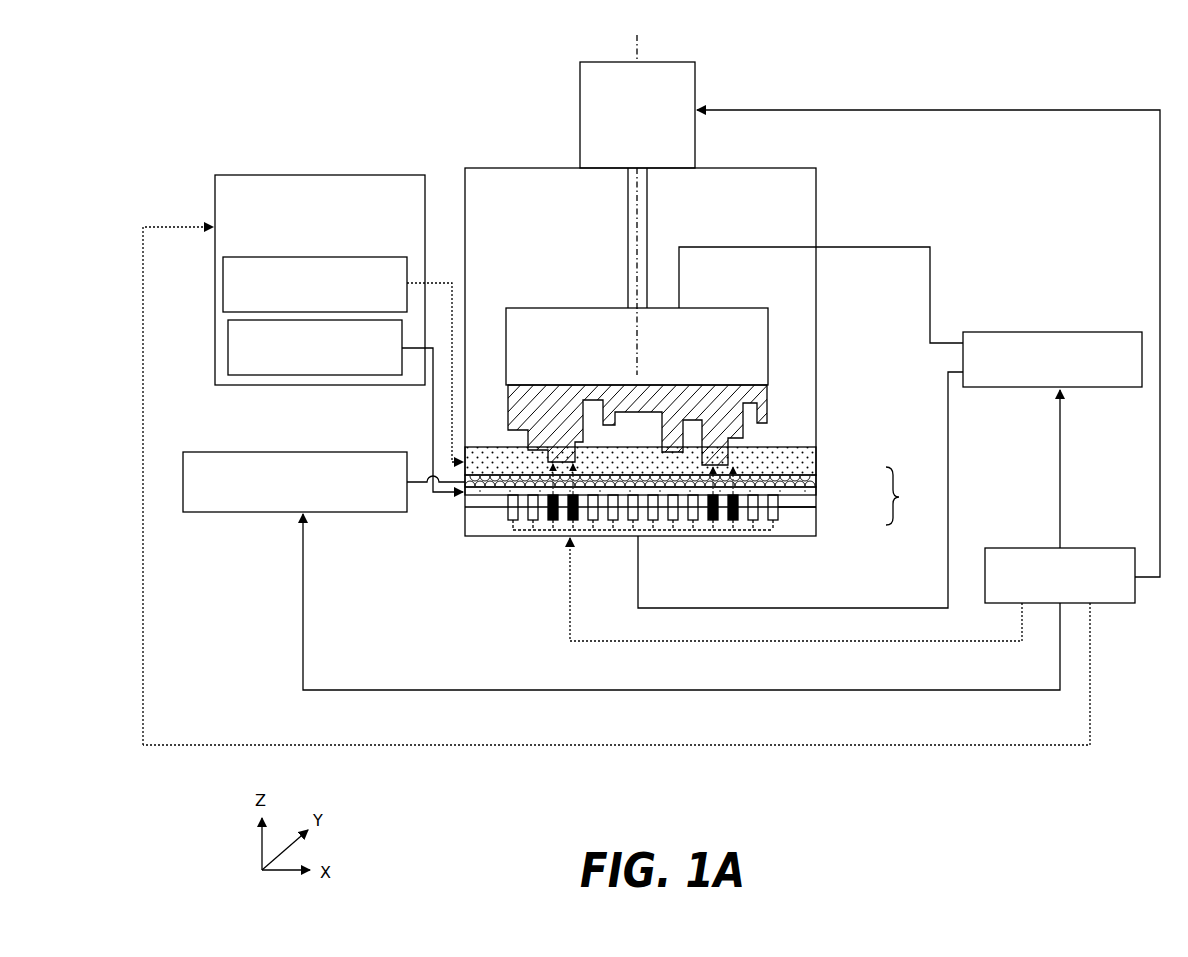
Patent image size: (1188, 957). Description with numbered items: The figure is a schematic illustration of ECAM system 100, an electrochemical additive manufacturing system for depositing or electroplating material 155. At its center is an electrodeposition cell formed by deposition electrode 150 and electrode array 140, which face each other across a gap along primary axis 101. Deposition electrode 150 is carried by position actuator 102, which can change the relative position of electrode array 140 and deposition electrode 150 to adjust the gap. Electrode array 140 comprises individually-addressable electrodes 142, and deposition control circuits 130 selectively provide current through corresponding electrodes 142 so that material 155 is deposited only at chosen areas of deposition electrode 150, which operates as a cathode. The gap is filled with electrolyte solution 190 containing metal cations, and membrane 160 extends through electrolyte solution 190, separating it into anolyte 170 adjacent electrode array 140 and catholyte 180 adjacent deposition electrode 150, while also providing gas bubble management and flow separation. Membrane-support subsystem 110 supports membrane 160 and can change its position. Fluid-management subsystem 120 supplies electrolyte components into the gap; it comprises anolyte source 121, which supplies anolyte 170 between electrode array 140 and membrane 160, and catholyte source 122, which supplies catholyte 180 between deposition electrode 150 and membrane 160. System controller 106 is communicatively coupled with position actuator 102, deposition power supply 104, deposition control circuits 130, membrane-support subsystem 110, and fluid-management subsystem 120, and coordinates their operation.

The ECAM system 100 is at (420, 140).
The primary axis 101 is at (628, 222).
The position actuator 102 is at (653, 153).
The deposition power supply 104 is at (1102, 378).
The system controller 106 is at (1123, 595).
The membrane-support subsystem 110 is at (365, 503).
The fluid-management subsystem 120 is at (390, 231).
The anolyte source 121 is at (330, 366).
The catholyte source 122 is at (330, 303).
The deposition control circuits 130 is at (768, 512).
The electrode array 140 is at (803, 512).
The individually-addressable electrodes 142 is at (777, 508).
The deposition electrode 150 is at (754, 366).
The material 155 is at (745, 433).
The membrane 160 is at (812, 458).
The anolyte 170 is at (814, 494).
The catholyte 180 is at (816, 480).
The electrolyte solution 190 is at (912, 496).